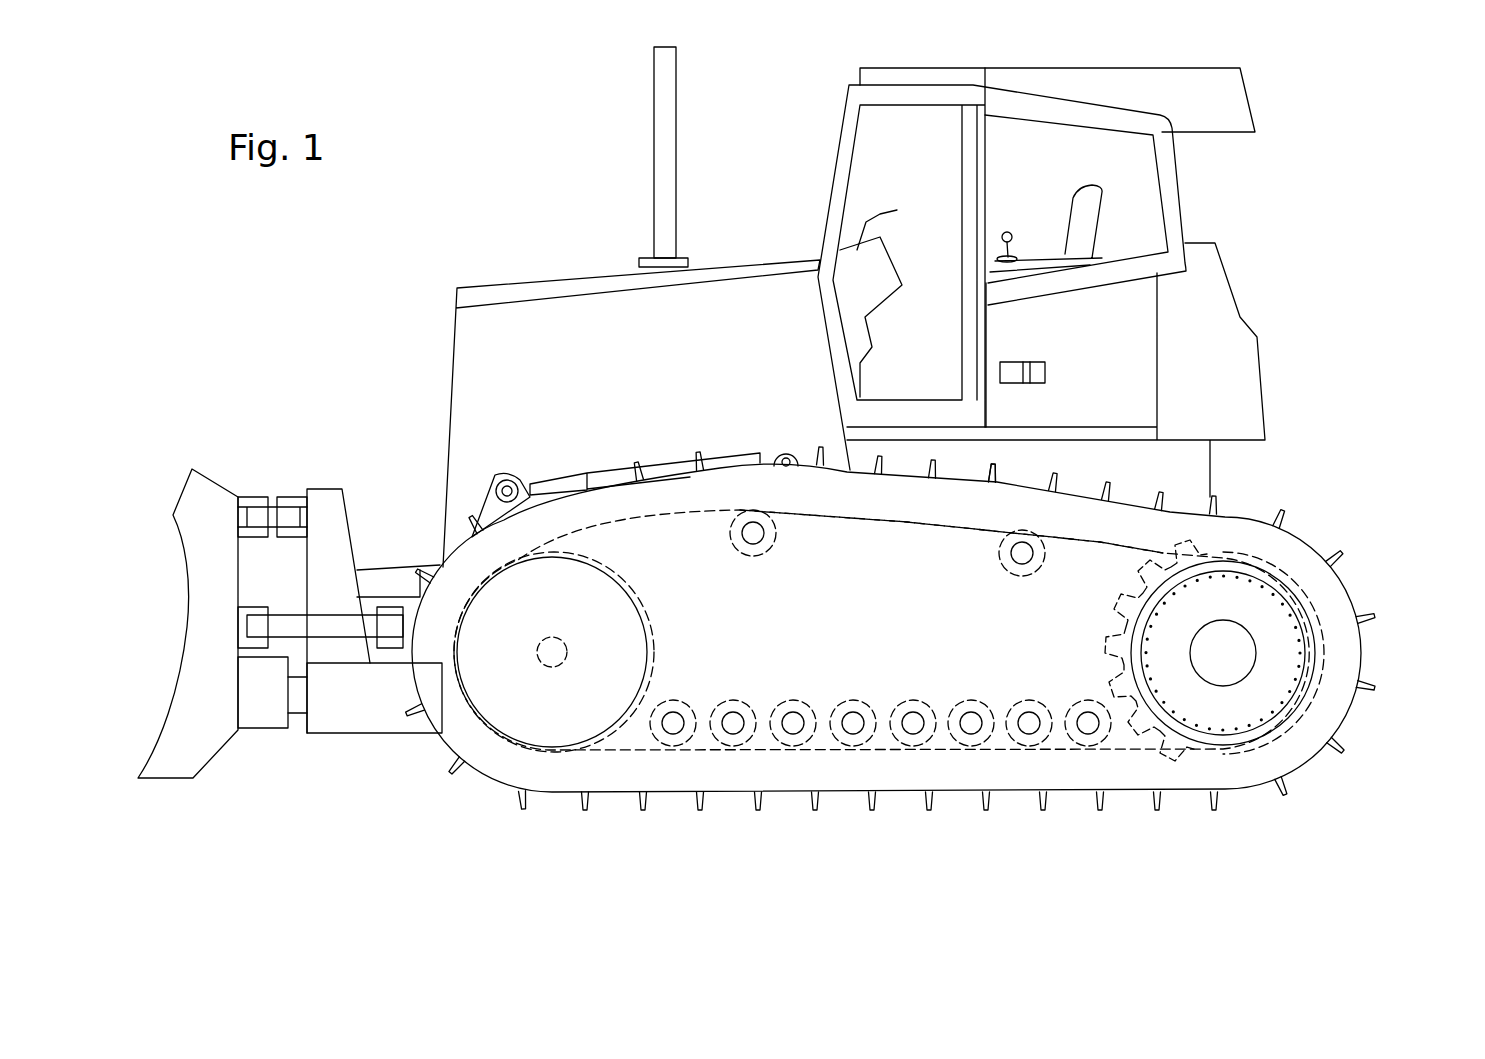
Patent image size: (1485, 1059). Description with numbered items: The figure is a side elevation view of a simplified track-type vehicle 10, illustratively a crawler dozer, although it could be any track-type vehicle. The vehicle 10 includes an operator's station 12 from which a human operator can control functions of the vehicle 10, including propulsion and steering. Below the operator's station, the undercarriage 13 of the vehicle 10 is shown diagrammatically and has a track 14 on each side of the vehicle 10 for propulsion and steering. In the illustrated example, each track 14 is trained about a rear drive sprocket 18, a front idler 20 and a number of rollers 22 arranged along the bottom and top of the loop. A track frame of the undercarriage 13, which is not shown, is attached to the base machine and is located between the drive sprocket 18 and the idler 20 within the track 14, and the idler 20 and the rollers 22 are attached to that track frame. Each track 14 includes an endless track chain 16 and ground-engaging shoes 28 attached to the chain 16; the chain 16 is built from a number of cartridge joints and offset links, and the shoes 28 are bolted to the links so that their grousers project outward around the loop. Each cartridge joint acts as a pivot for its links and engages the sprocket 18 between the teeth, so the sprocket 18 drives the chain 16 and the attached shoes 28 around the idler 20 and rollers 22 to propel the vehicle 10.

The track-type vehicle 10 is at (510, 165).
The operator's station 12 is at (843, 130).
The undercarriage 13 is at (1412, 475).
The track 14 is at (1318, 510).
The endless track chain 16 is at (1083, 553).
The rear drive sprocket 18 is at (1157, 658).
The front idler 20 is at (563, 587).
The rollers 22 is at (772, 547).
The ground-engaging shoes 28 is at (992, 468).